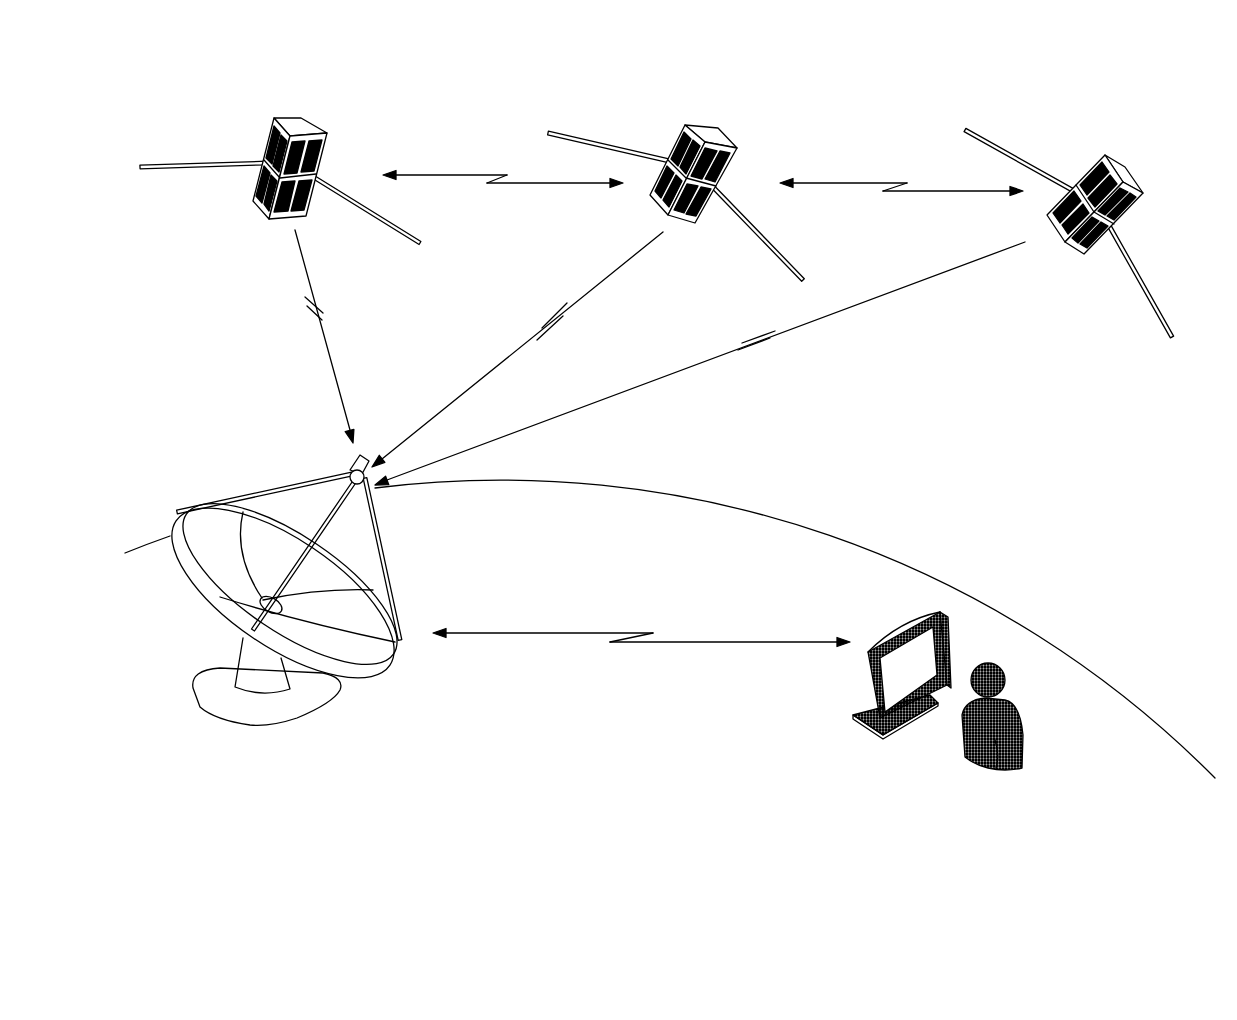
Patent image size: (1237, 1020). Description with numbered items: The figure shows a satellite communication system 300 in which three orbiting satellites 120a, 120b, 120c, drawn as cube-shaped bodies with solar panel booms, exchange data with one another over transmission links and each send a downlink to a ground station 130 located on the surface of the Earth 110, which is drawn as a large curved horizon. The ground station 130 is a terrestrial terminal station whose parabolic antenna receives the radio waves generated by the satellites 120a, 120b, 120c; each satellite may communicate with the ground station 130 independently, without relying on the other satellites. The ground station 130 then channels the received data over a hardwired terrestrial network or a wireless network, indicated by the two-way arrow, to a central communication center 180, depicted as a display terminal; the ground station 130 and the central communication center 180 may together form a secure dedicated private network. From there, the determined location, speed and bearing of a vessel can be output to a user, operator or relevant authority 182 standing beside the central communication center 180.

The satellite communication system 300 is at (162, 34).
The satellite 120a is at (275, 116).
The satellite 120b is at (689, 123).
The satellite 120c is at (1108, 153).
The ground station 130 is at (188, 498).
The Earth 110 is at (672, 498).
The central communication center 180 is at (883, 631).
The user, operator or relevant authority 182 is at (982, 663).